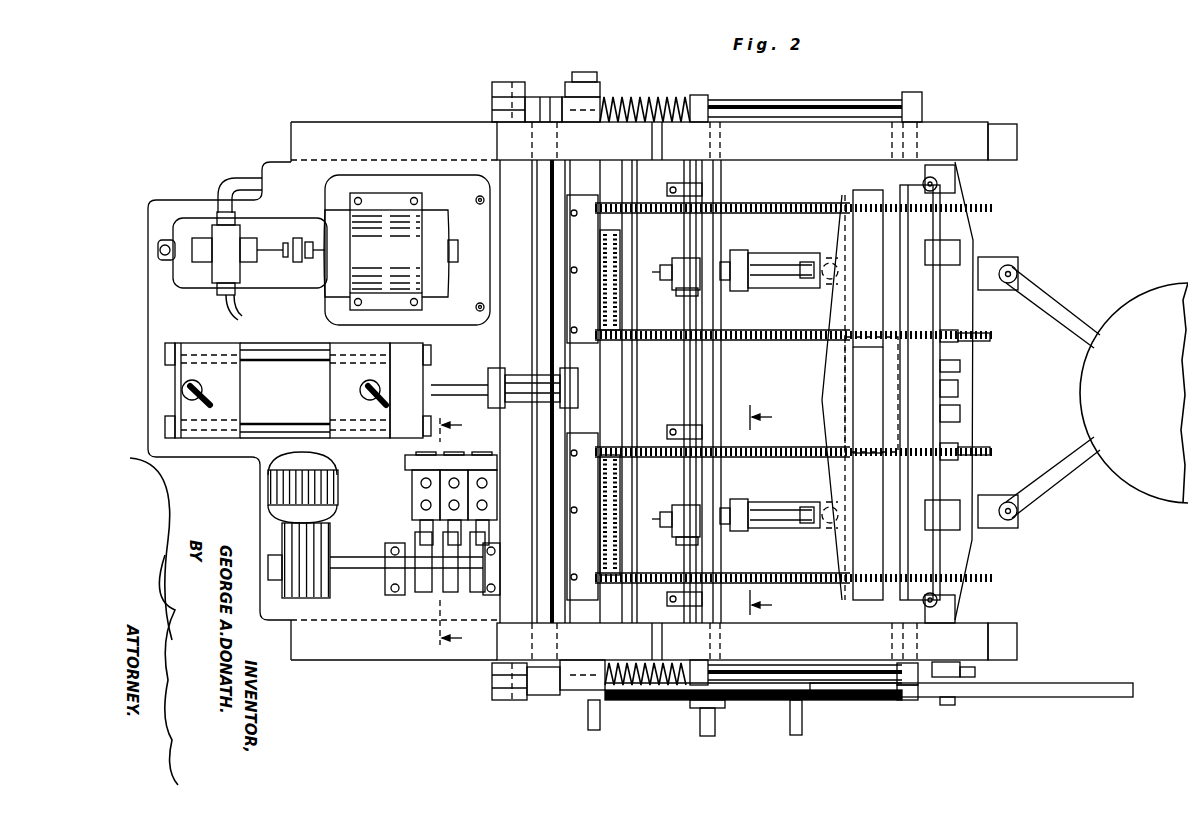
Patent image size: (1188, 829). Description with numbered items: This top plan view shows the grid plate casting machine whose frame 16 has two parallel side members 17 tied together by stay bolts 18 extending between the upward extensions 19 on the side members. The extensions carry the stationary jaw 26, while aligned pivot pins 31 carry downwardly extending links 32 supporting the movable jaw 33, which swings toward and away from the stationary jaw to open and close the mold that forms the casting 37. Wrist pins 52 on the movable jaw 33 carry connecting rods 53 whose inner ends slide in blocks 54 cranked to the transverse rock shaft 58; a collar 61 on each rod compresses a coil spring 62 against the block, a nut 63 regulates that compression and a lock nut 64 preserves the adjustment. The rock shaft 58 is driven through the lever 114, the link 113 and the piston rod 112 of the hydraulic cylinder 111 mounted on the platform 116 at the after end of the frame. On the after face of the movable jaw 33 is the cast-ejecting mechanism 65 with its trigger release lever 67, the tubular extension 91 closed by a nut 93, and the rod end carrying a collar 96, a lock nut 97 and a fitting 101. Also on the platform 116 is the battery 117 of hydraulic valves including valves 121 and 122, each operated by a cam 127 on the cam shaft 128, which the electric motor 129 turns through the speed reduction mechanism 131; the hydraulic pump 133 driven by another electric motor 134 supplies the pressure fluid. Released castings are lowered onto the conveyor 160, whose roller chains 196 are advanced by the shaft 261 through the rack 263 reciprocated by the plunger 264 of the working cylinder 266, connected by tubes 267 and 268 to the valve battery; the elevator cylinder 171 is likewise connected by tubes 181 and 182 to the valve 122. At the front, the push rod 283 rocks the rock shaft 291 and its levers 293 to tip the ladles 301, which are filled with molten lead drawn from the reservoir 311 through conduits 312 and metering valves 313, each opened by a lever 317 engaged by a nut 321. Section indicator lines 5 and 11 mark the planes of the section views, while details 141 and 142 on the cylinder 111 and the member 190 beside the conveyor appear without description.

The section line 5 is at (770, 510).
The section line 11 is at (462, 657).
The frame 16 is at (398, 662).
The side members 17 is at (448, 122).
The stay bolts 18 is at (705, 188).
The upward extensions 19 is at (755, 128).
The stationary jaw 26 is at (965, 312).
The pivot pins 31 is at (900, 147).
The links 32 is at (948, 168).
The movable jaw 33 is at (846, 222).
The casting 37 is at (602, 252).
The wrist pins 52 is at (910, 92).
The connecting rod 53 is at (826, 105).
The block 54 is at (592, 100).
The rock shaft 58 is at (555, 490).
The collar 61 is at (698, 97).
The coil spring 62 is at (557, 97).
The nut 63 is at (550, 695).
The lock nut 64 is at (536, 97).
The cast-ejecting mechanism 65 is at (812, 288).
The trigger release lever 67 is at (778, 268).
The tubular extension 91 is at (760, 285).
The nut 93 is at (740, 262).
The collar 96 is at (676, 288).
The lock nut 97 is at (672, 262).
The valve body 101 is at (688, 296).
The hydraulic cylinder 111 is at (305, 365).
The piston rod 112 is at (452, 384).
The link 113 is at (560, 398).
The lever 114 is at (578, 385).
The platform 116 is at (262, 452).
The battery of hydraulic valves 117 is at (402, 478).
The valve 121 is at (418, 495).
The valve 122 is at (450, 470).
The cam 127 is at (428, 585).
The cam shaft 128 is at (372, 572).
The electric motor 129 is at (336, 480).
The speed reduction mechanism 131 is at (320, 552).
The hydraulic pump 133 is at (222, 272).
The electric motor 134 is at (388, 215).
The port 141 is at (212, 400).
The port 142 is at (368, 395).
The conveyor 160 is at (772, 447).
The cylinder 171 is at (720, 710).
The tube 181 is at (706, 736).
The tube 182 is at (700, 708).
The rack bar 190 is at (838, 583).
The roller chain 196 is at (802, 208).
The shaft 261 is at (948, 705).
The rack 263 is at (1036, 697).
The plunger 264 is at (825, 690).
The hydraulic working cylinder 266 is at (790, 700).
The tube 267 is at (804, 735).
The tube 268 is at (594, 730).
The push rod 283 is at (965, 678).
The rock shaft 291 is at (950, 430).
The levers 293 is at (950, 448).
The ladles 301 is at (950, 257).
The reservoir 311 is at (1170, 290).
The conduits 312 is at (1080, 310).
The metering valves 313 is at (1016, 271).
The lever 317 is at (1008, 262).
The nut 321 is at (937, 188).